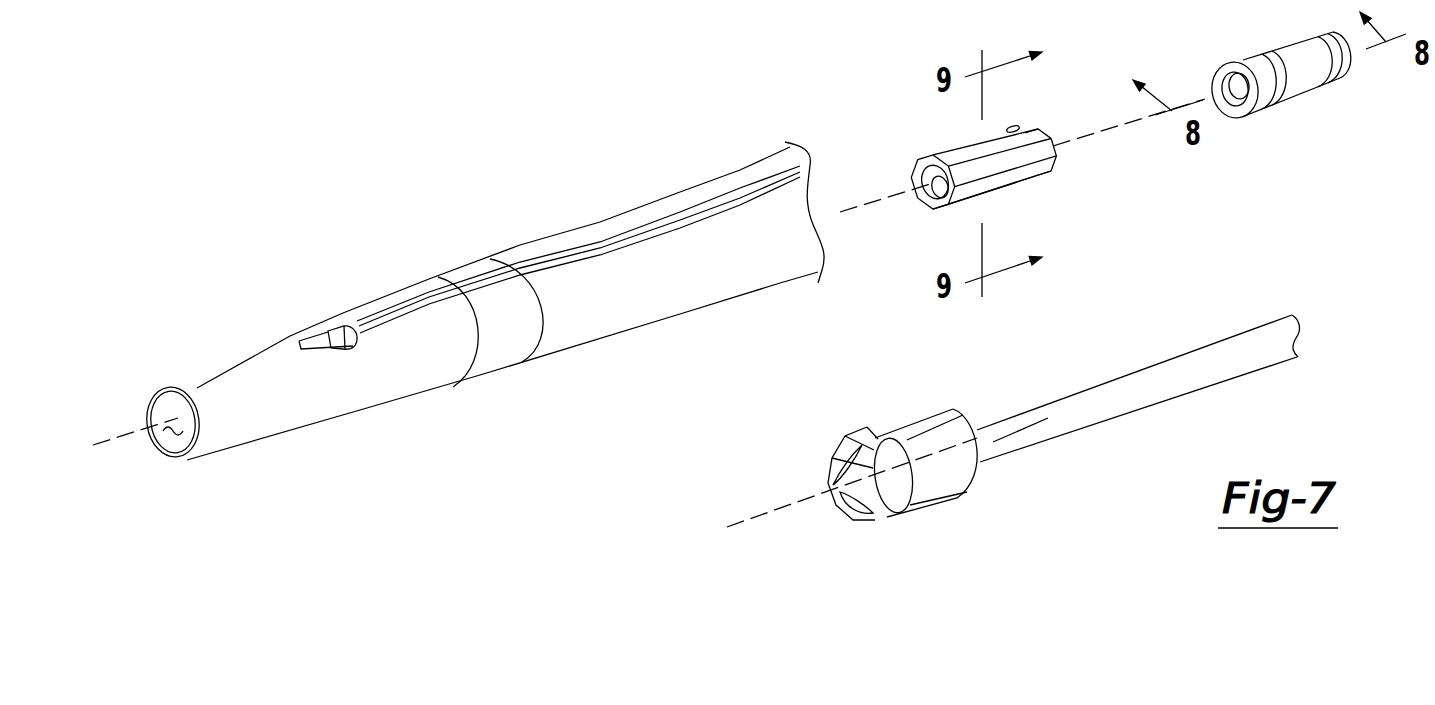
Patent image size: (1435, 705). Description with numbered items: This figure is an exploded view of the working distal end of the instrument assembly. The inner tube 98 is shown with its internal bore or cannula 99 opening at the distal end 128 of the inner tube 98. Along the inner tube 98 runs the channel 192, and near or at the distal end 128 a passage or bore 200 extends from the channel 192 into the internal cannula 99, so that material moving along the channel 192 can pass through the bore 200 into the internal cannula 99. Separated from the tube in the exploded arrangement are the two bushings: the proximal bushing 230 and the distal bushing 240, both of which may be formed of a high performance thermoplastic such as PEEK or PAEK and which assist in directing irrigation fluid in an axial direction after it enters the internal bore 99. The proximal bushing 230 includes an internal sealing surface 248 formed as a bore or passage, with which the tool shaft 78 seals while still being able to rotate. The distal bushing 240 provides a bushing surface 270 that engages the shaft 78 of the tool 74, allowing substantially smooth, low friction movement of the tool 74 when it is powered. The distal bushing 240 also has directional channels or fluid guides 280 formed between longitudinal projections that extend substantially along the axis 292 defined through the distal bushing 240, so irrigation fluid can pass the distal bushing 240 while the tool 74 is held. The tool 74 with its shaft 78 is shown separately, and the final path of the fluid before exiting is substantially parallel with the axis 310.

The tool 74 is at (986, 398).
The tool shaft 78 is at (1133, 372).
The inner tube 98 is at (212, 477).
The internal cannula 99 is at (171, 456).
The distal end 128 is at (194, 405).
The channel 192 is at (502, 284).
The bore 200 is at (348, 343).
The proximal bushing 230 is at (1318, 142).
The distal bushing 240 is at (1042, 200).
The internal sealing surface 248 is at (1224, 80).
The bushing surface 270 is at (940, 198).
The fluid guide 280 is at (1014, 127).
The axis 292 is at (910, 180).
The axis 310 is at (770, 508).